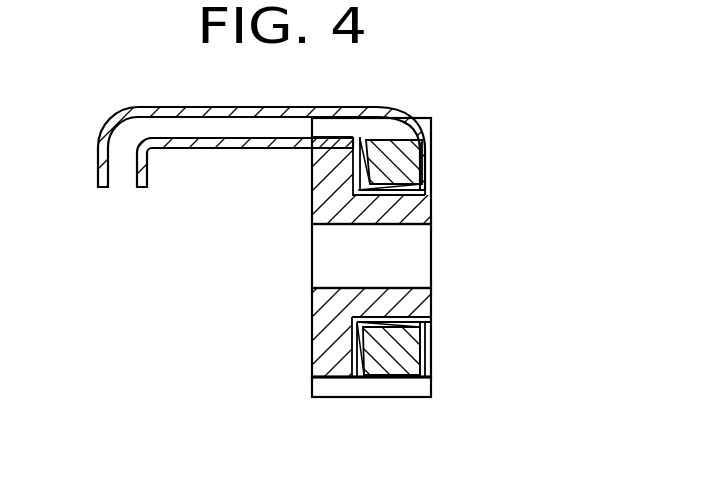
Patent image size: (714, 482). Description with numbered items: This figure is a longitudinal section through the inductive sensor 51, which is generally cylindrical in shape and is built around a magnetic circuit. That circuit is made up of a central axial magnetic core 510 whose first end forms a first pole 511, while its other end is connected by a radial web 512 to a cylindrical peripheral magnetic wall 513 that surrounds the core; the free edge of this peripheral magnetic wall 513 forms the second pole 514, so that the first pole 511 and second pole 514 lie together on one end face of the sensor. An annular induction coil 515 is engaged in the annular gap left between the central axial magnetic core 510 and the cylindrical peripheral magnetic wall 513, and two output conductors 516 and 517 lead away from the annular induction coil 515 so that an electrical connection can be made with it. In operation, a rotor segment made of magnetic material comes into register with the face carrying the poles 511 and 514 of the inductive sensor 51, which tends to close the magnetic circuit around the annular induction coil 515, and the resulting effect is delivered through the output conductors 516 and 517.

The inductive sensor 51 is at (388, 99).
The central axial magnetic core 510 is at (446, 213).
The first pole 511 is at (426, 302).
The radial web 512 is at (328, 343).
The cylindrical peripheral magnetic wall 513 is at (370, 408).
The second pole 514 is at (432, 385).
The annular induction coil 515 is at (390, 163).
The output conductor 516 is at (118, 120).
The output conductor 517 is at (143, 167).